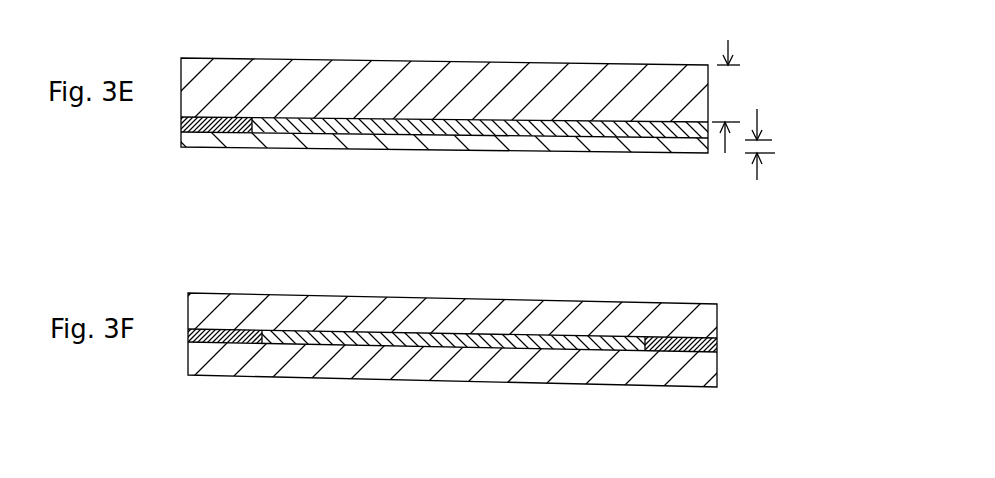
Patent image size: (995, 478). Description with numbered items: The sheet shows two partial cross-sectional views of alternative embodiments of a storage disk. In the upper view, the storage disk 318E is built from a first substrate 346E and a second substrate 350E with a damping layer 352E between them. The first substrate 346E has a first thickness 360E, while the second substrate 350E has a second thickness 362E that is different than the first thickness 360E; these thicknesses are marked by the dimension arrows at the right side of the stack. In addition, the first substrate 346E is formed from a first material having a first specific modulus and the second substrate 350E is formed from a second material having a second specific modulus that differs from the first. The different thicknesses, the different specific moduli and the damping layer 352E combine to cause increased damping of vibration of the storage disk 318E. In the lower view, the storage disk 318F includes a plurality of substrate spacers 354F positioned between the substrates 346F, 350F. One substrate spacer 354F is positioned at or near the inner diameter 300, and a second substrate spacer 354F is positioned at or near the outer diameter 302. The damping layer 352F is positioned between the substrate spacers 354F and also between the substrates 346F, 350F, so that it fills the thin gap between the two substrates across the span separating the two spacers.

In FIG. 3E, the storage disk 318E is at (577, 51).
In FIG. 3E, the first substrate 346E is at (213, 63).
In FIG. 3E, the damping layer 352E is at (342, 112).
In FIG. 3E, the second substrate 350E is at (183, 133).
In FIG. 3E, the first thickness 360E is at (737, 87).
In FIG. 3E, the second thickness 362E is at (768, 135).
In FIG. 3F, the storage disk 318F is at (738, 375).
In FIG. 3F, the substrate 346F is at (395, 316).
In FIG. 3F, the damping layer 352F is at (533, 344).
In FIG. 3F, the substrate 350F is at (413, 366).
In FIG. 3F, the substrate spacers 354F is at (230, 334).
In FIG. 3F, the inner diameter 300 is at (186, 330).
In FIG. 3F, the outer diameter 302 is at (718, 317).